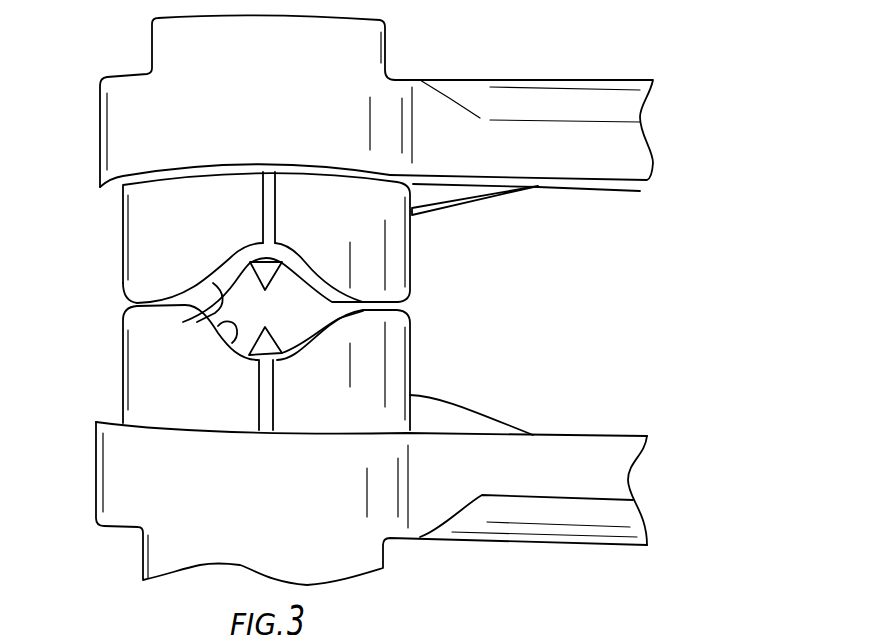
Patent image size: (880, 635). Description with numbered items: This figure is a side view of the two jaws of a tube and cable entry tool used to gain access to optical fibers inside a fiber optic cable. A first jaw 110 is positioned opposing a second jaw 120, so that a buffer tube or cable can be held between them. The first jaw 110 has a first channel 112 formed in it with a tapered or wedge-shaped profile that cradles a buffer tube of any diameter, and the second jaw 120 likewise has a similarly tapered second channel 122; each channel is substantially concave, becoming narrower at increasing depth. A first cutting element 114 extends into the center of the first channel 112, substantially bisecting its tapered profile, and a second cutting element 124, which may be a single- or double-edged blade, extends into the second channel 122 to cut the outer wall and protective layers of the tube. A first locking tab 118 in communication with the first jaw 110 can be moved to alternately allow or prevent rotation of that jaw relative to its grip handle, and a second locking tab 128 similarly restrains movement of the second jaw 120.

The first jaw 110 is at (133, 242).
The first channel 112 is at (183, 322).
The first cutting element 114 is at (263, 277).
The first locking tab 118 is at (480, 193).
The second jaw 120 is at (123, 388).
The second channel 122 is at (218, 326).
The second cutting element 124 is at (268, 342).
The second locking tab 128 is at (468, 410).